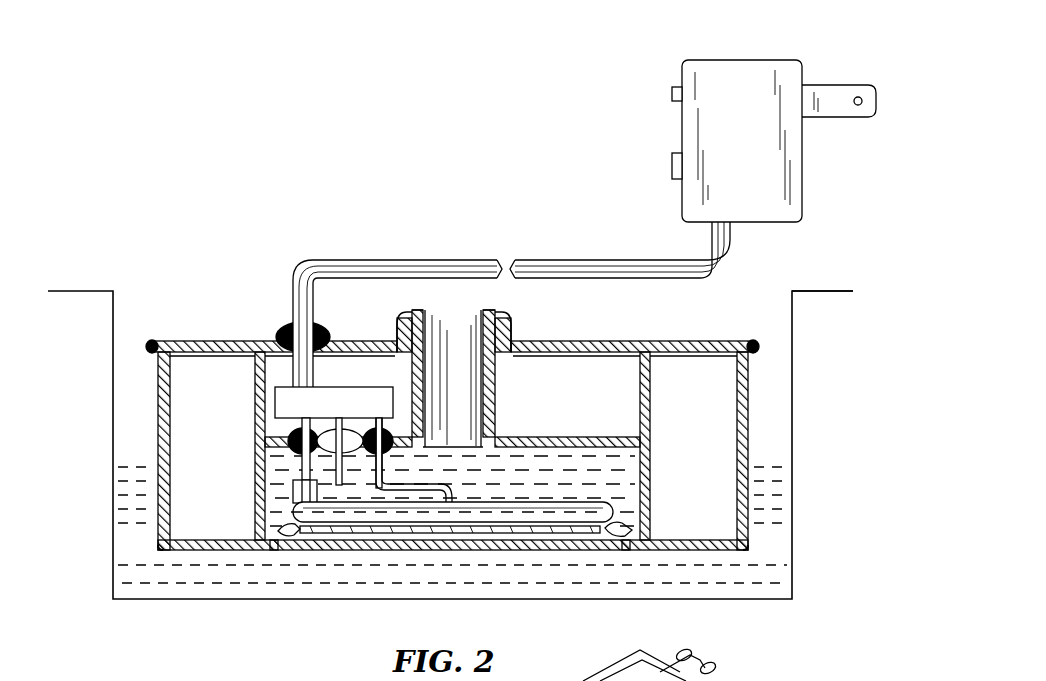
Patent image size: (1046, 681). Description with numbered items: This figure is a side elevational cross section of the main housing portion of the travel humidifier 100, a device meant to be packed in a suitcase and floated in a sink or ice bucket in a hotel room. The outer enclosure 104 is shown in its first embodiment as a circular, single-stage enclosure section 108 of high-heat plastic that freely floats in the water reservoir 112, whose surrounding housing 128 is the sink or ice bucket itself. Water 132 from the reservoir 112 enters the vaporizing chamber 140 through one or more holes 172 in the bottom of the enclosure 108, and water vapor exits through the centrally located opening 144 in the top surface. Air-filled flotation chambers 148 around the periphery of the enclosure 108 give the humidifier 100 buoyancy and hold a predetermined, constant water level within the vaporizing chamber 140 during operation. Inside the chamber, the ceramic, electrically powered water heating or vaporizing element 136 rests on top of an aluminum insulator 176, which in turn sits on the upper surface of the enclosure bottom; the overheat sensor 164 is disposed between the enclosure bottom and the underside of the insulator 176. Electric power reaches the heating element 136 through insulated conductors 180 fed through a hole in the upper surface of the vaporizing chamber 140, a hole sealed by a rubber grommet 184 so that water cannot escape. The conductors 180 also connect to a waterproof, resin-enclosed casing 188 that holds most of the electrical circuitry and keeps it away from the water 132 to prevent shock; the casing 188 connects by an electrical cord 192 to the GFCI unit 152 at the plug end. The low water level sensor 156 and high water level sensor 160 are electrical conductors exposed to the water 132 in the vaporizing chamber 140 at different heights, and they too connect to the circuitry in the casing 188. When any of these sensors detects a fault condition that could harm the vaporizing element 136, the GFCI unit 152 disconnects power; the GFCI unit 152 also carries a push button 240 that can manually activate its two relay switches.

The travel humidifier 100 is at (192, 243).
The outer enclosure 104 is at (157, 318).
The single enclosure section 108 is at (679, 340).
The water reservoir 112 is at (136, 257).
The housing of the sink or ice bucket 128 is at (812, 290).
The water 132 is at (615, 480).
The water heating or vaporizing element 136 is at (360, 520).
The vaporizing chamber 140 is at (565, 455).
The opening 144 is at (460, 322).
The flotation chambers 148 is at (222, 372).
The GFCI unit 152 is at (795, 155).
The low water level sensor 156 is at (335, 470).
The high water level sensor 160 is at (385, 467).
The overheat sensor 164 is at (460, 534).
The holes 172 is at (275, 550).
The aluminum insulator 176 is at (630, 530).
The insulated conductors 180 is at (293, 495).
The rubber grommet 184 is at (288, 440).
The resin-enclosed casing 188 is at (338, 395).
The electrical cord 192 is at (333, 260).
The push button 240 is at (672, 165).